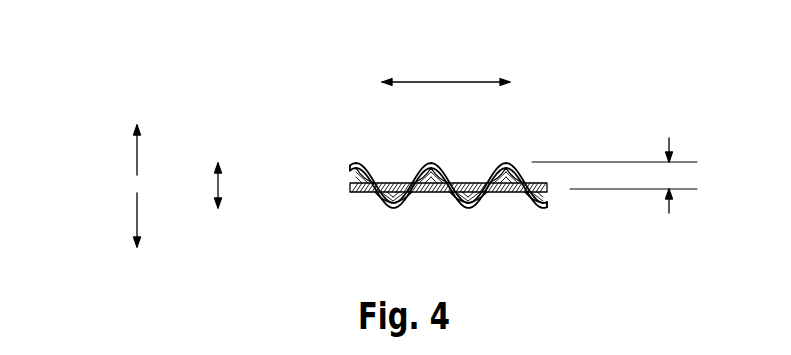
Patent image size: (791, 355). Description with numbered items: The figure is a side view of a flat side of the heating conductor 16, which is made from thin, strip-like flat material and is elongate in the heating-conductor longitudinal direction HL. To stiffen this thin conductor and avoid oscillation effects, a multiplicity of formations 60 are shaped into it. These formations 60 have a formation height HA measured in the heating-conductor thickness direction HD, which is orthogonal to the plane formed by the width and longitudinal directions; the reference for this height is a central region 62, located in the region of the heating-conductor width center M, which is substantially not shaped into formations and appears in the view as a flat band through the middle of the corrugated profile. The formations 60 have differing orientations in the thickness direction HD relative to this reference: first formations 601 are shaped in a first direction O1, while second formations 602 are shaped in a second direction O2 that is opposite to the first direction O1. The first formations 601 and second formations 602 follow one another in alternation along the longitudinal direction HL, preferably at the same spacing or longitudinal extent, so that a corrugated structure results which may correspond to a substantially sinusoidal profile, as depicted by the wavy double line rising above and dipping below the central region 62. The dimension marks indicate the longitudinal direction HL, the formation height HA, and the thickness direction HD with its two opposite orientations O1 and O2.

The heating conductor 16 is at (428, 192).
The formations 60 is at (422, 192).
The first formations 601 is at (477, 208).
The second formations 602 is at (433, 163).
The central region 62 is at (350, 185).
The heating-conductor width center M is at (373, 182).
The heating-conductor longitudinal direction HL is at (418, 82).
The formation height HA is at (670, 140).
The heating-conductor thickness direction HD is at (217, 185).
The first direction O1 is at (137, 223).
The second direction O2 is at (137, 152).